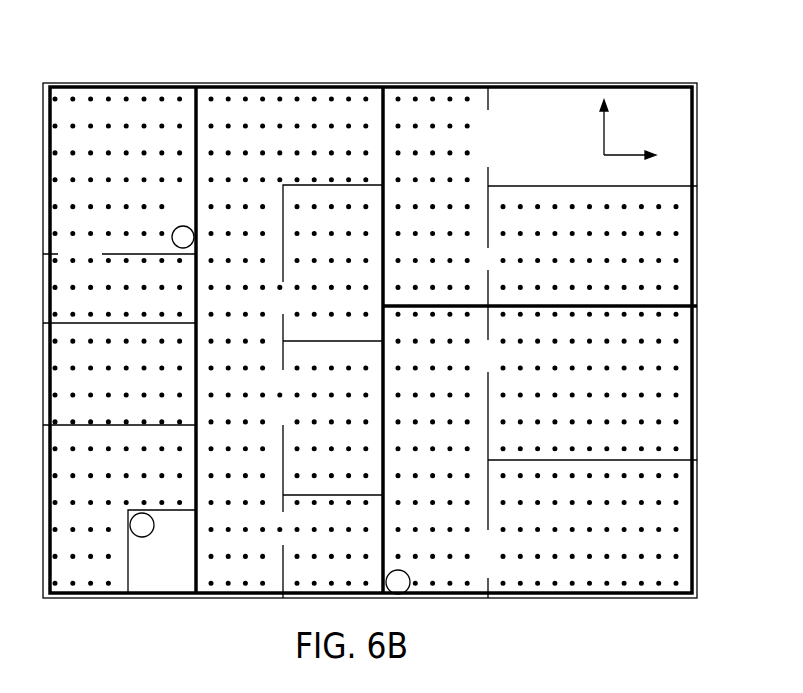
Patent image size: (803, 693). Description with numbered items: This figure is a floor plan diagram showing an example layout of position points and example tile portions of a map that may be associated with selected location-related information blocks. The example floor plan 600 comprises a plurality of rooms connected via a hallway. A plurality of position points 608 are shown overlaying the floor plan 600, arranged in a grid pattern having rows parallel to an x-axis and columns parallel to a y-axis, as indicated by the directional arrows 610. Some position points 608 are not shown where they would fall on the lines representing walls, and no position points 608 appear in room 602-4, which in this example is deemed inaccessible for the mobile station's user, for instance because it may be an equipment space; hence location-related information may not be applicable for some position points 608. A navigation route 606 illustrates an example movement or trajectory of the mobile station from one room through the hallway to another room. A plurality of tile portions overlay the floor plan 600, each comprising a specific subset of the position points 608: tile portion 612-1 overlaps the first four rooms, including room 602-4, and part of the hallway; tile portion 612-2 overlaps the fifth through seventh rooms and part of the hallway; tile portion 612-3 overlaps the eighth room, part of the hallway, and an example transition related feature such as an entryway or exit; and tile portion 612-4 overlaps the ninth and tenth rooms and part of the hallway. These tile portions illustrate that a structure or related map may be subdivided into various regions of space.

The floor plan 600 is at (456, 41).
The room 602-4 is at (162, 551).
The navigation route 606 is at (488, 138).
The position points 608 is at (433, 97).
The directional arrows 610 is at (620, 138).
The tile portion 612-1 is at (135, 85).
The tile portion 612-2 is at (283, 85).
The tile portion 612-3 is at (643, 87).
The tile portion 612-4 is at (607, 593).